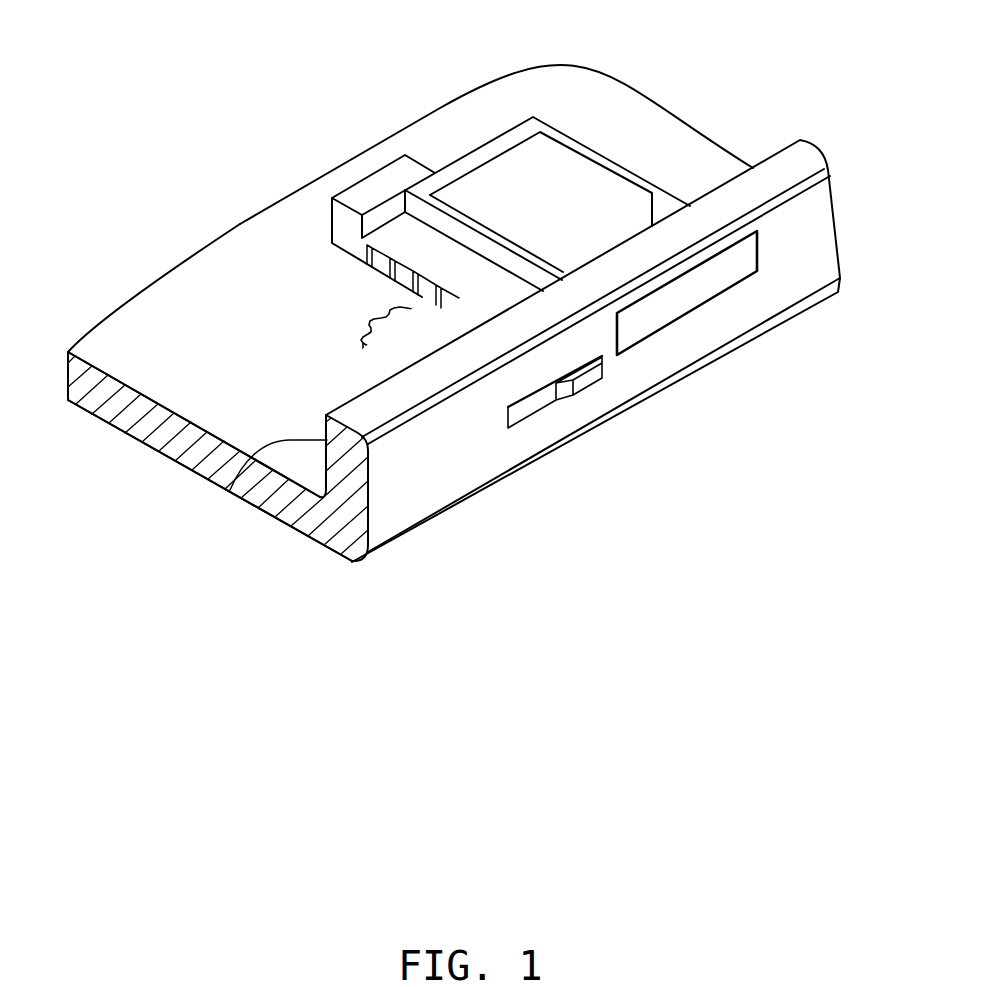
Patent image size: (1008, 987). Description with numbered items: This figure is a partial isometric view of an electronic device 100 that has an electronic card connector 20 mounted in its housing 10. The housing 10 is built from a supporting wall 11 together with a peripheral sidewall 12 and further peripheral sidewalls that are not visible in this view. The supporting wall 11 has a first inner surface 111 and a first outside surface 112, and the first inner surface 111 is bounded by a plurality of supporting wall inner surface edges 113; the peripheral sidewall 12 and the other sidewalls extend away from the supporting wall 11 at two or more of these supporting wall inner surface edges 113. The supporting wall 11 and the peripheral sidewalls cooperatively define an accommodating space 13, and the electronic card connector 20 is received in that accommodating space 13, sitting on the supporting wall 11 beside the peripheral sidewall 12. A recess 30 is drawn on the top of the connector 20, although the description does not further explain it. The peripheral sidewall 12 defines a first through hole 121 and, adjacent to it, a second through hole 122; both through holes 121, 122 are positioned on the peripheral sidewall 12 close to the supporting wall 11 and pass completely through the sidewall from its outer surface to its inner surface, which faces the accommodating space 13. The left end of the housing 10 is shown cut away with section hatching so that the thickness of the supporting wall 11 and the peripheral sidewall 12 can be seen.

The electronic device 100 is at (318, 66).
The housing 10 is at (478, 468).
The supporting wall 11 is at (638, 153).
The peripheral sidewall 12 is at (828, 222).
The accommodating space 13 is at (236, 295).
The electronic card connector 20 is at (476, 152).
The receiving recess 30 is at (557, 163).
The first inner surface 111 is at (148, 315).
The first outside surface 112 is at (421, 549).
The supporting wall inner surface edges 113 is at (306, 528).
The first through hole 121 is at (620, 335).
The second through hole 122 is at (530, 408).